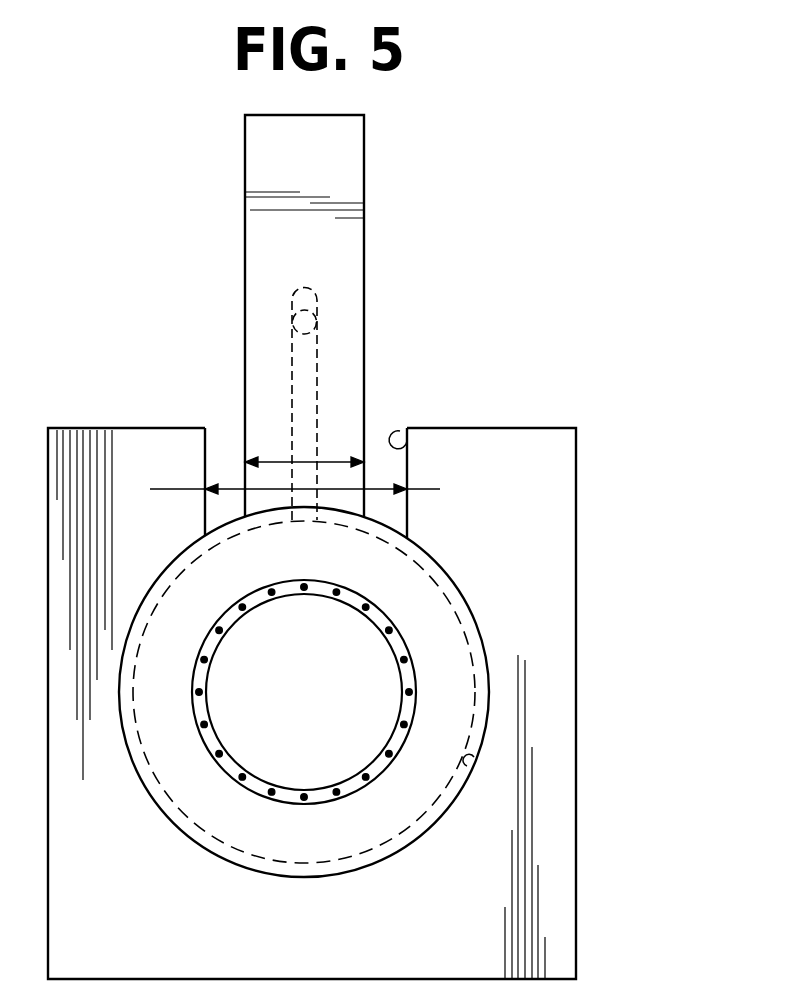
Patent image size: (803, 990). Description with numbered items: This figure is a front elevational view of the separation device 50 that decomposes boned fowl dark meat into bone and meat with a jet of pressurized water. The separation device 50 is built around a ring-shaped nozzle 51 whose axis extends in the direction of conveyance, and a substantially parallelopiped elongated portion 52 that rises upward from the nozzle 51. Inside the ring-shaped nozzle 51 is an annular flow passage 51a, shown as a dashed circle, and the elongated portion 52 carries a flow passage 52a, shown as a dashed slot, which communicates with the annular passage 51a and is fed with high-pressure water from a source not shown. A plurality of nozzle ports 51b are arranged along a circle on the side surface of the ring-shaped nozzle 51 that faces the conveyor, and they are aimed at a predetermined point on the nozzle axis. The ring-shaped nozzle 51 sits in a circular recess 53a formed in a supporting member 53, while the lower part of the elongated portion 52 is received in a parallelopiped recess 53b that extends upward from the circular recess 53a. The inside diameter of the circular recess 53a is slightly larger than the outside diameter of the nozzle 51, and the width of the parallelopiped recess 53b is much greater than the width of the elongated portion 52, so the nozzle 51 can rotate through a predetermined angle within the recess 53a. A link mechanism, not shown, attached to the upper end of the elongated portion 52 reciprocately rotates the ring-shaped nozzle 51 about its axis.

The separation device 50 is at (402, 277).
The ring-shaped nozzle 51 is at (450, 630).
The annular flow passage 51a is at (433, 587).
The nozzle ports 51b is at (410, 688).
The elongated portion 52 is at (364, 178).
The flow passage 52a is at (320, 342).
The supporting member 53 is at (565, 747).
The circular recess 53a is at (470, 760).
The parallelopiped recess 53b is at (406, 438).